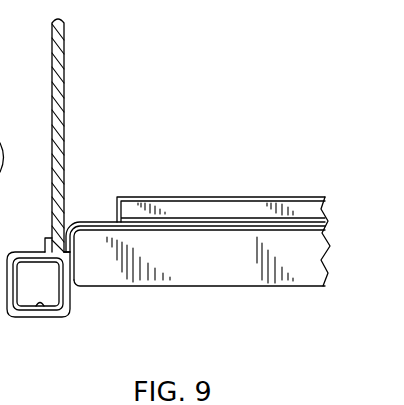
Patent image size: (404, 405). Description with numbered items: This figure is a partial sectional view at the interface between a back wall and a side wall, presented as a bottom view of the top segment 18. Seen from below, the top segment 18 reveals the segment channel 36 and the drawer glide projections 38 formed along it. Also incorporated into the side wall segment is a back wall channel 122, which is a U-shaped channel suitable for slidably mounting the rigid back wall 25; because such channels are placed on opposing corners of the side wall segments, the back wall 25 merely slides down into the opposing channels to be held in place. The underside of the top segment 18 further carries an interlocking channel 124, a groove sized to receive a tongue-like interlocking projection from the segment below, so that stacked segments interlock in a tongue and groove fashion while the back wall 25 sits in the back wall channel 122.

The top segment 18 is at (218, 275).
The back wall 25 is at (64, 104).
The segment channel 36 is at (44, 302).
The drawer glide projections 38 is at (218, 208).
The back wall channel 122 is at (57, 242).
The interlocking channel 124 is at (258, 222).